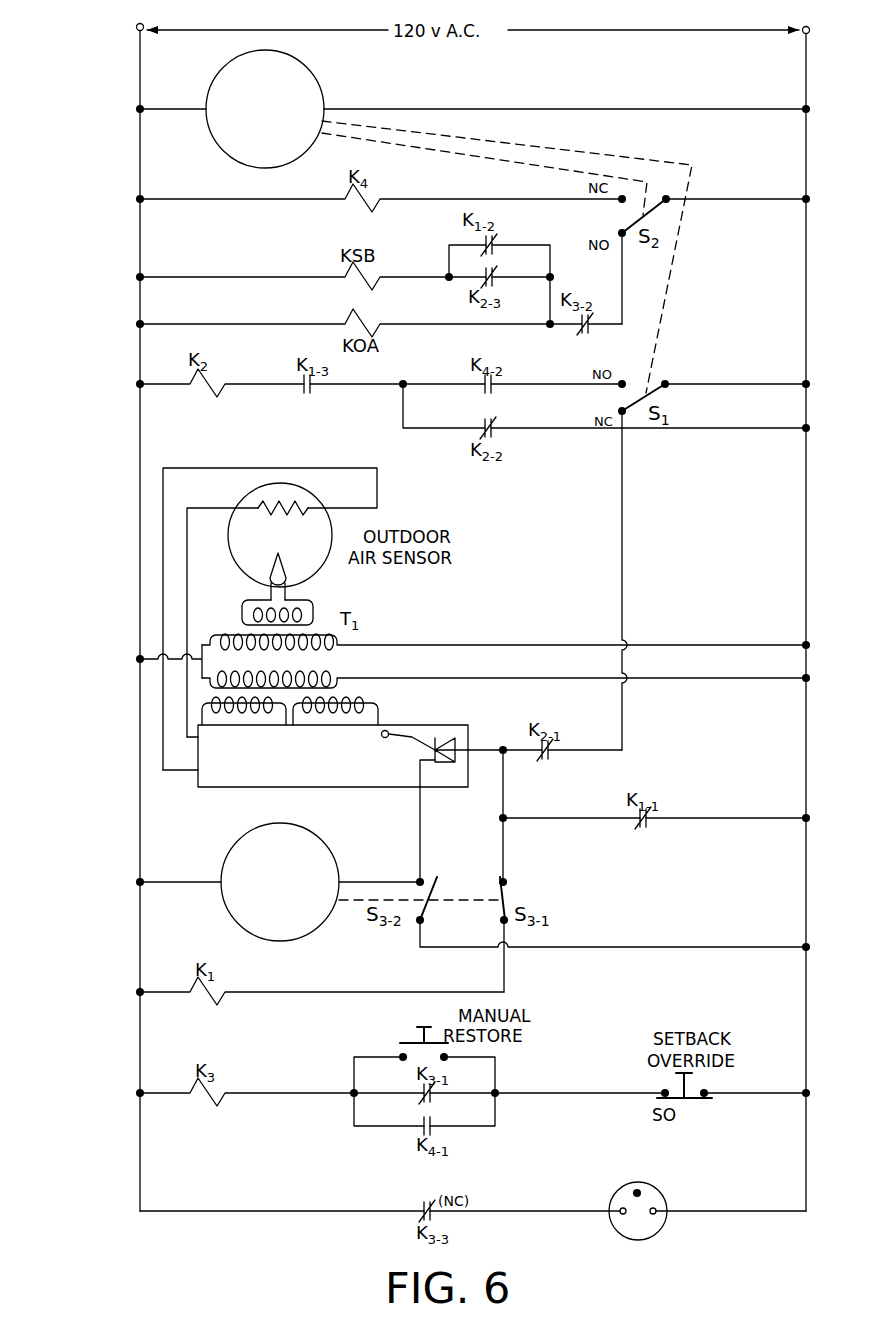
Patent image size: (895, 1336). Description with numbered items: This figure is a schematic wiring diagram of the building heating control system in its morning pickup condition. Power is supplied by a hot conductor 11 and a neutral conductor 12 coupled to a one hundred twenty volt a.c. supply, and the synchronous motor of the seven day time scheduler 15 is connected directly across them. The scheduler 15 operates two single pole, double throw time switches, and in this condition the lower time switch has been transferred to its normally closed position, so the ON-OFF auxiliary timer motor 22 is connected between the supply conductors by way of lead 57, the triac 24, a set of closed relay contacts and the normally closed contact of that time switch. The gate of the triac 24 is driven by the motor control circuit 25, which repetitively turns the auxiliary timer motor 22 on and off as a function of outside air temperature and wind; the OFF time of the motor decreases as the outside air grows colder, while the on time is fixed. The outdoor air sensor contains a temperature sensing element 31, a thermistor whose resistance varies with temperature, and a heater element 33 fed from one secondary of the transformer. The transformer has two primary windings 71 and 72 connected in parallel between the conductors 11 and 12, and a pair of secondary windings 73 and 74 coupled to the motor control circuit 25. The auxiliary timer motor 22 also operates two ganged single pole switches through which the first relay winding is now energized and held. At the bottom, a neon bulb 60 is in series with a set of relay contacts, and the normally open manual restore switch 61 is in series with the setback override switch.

The hot conductor 11 is at (806, 93).
The neutral conductor 12 is at (140, 86).
The seven day time scheduler 15 is at (220, 147).
The ON-OFF auxiliary timer motor 22 is at (223, 907).
The triac 24 is at (455, 736).
The motor control circuit 25 is at (226, 787).
The temperature sensing element 31 is at (267, 507).
The heater element 33 is at (270, 570).
The lead 57 is at (389, 882).
The neon bulb 60 is at (661, 1191).
The manual restore switch 61 is at (412, 1040).
The primary winding 71 is at (232, 634).
The primary winding 72 is at (330, 673).
The secondary winding 73 is at (380, 705).
The secondary winding 74 is at (202, 705).